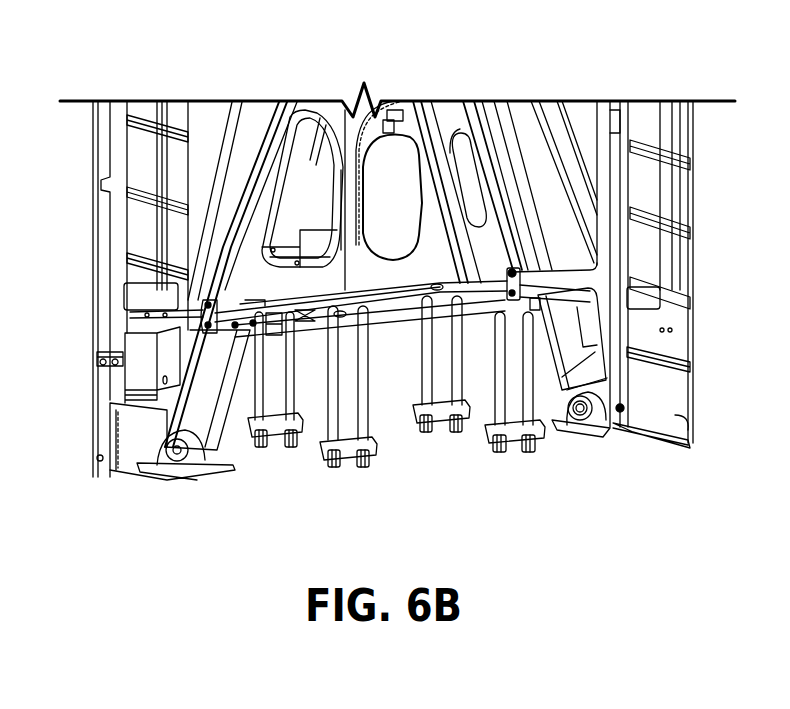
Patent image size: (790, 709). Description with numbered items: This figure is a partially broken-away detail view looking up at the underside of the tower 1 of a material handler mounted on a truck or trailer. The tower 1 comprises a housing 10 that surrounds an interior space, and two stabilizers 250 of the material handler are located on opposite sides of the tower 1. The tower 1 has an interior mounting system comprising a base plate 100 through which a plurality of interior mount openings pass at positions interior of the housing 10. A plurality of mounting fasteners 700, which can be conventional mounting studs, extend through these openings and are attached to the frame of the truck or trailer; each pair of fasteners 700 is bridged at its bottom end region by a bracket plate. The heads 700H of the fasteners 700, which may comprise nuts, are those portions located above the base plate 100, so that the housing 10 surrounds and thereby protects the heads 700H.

The tower 1 is at (365, 100).
The housing 10 is at (470, 100).
The stabilizers 250 is at (247, 142).
The base plate 100 is at (240, 300).
The heads 700H is at (437, 283).
The mounting fasteners 700 is at (295, 405).